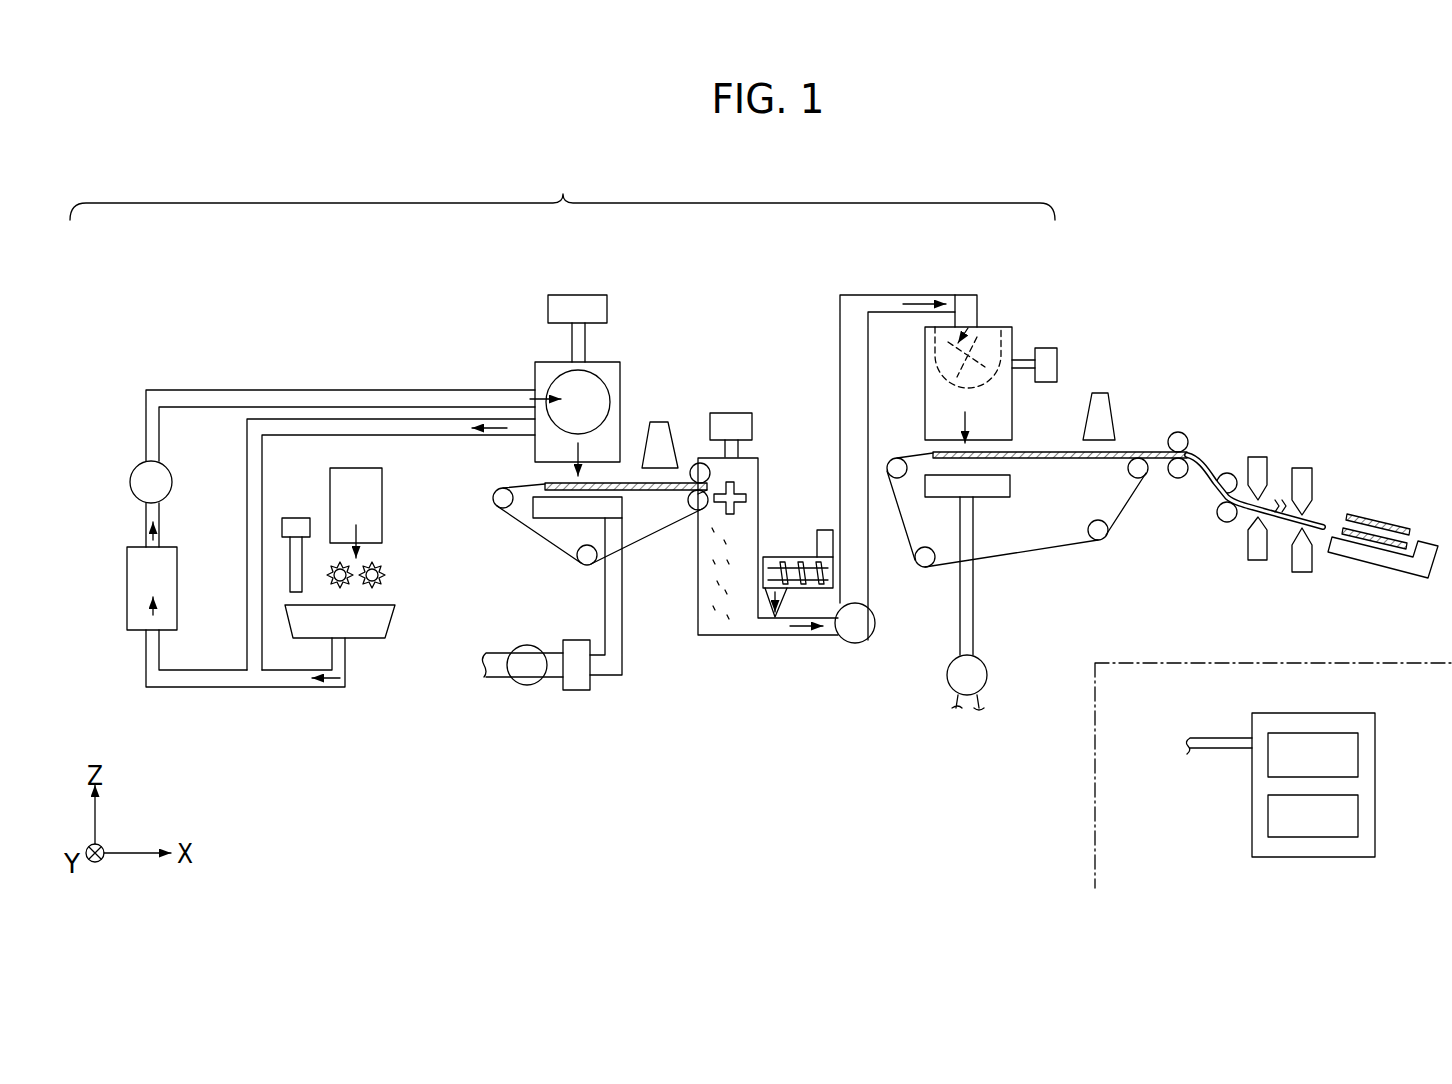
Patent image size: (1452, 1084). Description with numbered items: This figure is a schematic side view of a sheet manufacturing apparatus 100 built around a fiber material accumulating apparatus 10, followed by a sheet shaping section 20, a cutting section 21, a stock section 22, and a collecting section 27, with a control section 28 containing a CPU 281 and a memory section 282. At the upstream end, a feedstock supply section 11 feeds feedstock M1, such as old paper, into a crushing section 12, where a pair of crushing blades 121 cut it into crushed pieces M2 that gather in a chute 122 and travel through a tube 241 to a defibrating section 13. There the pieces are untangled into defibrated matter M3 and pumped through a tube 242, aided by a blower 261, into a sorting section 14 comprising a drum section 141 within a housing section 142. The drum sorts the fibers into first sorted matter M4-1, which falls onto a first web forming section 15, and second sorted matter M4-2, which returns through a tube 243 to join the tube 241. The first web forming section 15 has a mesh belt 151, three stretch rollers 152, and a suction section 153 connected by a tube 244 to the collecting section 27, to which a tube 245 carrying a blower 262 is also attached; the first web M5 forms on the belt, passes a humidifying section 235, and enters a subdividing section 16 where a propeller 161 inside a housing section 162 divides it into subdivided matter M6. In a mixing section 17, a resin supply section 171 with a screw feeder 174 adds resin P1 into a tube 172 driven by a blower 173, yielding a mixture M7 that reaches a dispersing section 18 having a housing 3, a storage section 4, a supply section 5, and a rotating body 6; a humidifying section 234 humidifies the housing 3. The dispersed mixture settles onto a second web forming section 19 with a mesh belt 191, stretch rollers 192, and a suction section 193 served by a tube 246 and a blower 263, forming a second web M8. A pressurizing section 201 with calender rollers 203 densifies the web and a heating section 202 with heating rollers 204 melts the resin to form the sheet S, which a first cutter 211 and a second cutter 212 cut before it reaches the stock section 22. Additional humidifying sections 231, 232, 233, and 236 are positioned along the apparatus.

The sheet manufacturing apparatus 100 is at (1162, 227).
The fiber material accumulating apparatus 10 is at (562, 188).
The feedstock supply section 11 is at (345, 468).
The crushing section 12 is at (400, 567).
The crushing blades 121 is at (350, 588).
The chute 122 is at (385, 625).
The defibrating section 13 is at (127, 590).
The sorting section 14 is at (622, 389).
The drum section 141 is at (607, 376).
The housing section 142 is at (615, 362).
The first web forming section 15 is at (584, 545).
The mesh belt 151 is at (641, 578).
The stretch rollers 152 is at (500, 498).
The suction section 153 is at (622, 508).
The subdividing section 16 is at (758, 462).
The propeller 161 is at (746, 490).
The housing section 162 is at (708, 637).
The mixing section 17 is at (905, 509).
The resin supply section 171 is at (810, 557).
The tube 172 is at (868, 600).
The blower 173 is at (867, 647).
The screw feeder 174 is at (777, 560).
The dispersing section 18 is at (982, 335).
The housing 3 is at (920, 354).
The storage section 4 is at (993, 340).
The supply section 5 is at (965, 295).
The rotating body 6 is at (980, 313).
The second web forming section 19 is at (1030, 523).
The mesh belt 191 is at (1020, 555).
The stretch rollers 192 is at (897, 460).
The suction section 193 is at (1010, 488).
The sheet shaping section 20 is at (1200, 481).
The pressurizing section 201 is at (1176, 417).
The heating section 202 is at (1191, 539).
The calender rollers 203 is at (1225, 395).
The heating rollers 204 is at (1218, 500).
The cutting section 21 is at (1310, 466).
The first cutter 211 is at (1270, 448).
The second cutter 212 is at (1275, 400).
The stock section 22 is at (1395, 572).
The humidifying section 231 is at (296, 518).
The humidifying section 232 is at (578, 295).
The humidifying section 233 is at (733, 413).
The humidifying section 234 is at (1052, 348).
The humidifying section 235 is at (660, 422).
The humidifying section 236 is at (1100, 393).
The tube 241 is at (305, 687).
The tube 242 is at (172, 390).
The tube 243 is at (368, 419).
The tube 244 is at (622, 645).
The tube 245 is at (550, 677).
The tube 246 is at (975, 628).
The blower 261 is at (133, 467).
The blower 262 is at (520, 683).
The blower 263 is at (988, 672).
The collecting section 27 is at (583, 690).
The control section 28 is at (1273, 796).
The CPU 281 is at (1358, 745).
The memory section 282 is at (1358, 812).
The feedstock M1 is at (358, 535).
The crushed pieces M2 is at (150, 638).
The defibrated matter M3 is at (150, 550).
The first sorted matter M4-1 is at (575, 453).
The second sorted matter M4-2 is at (493, 426).
The first web M5 is at (700, 470).
The subdivided matter M6 is at (723, 546).
The mixture M7 is at (802, 628).
The second web M8 is at (1060, 450).
The resin P1 is at (787, 593).
The sheet S is at (1243, 494).